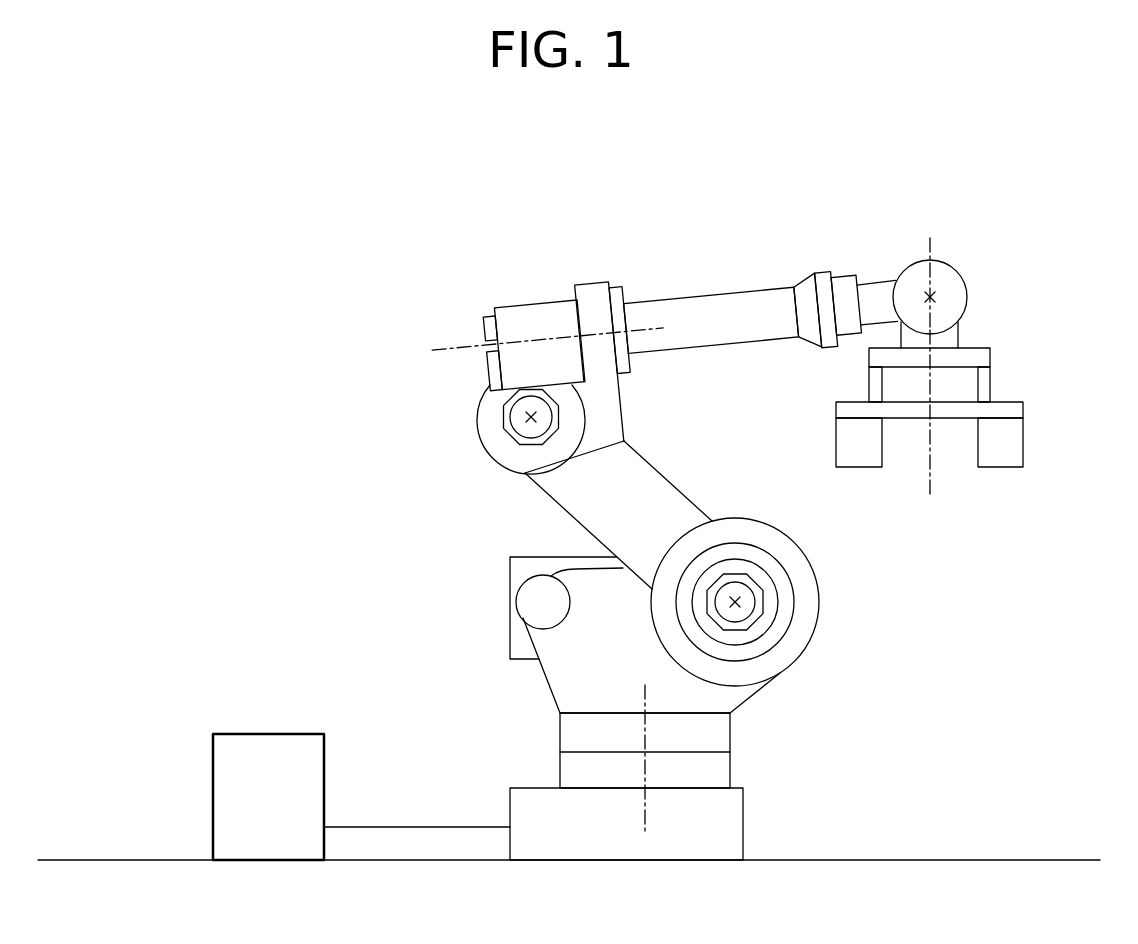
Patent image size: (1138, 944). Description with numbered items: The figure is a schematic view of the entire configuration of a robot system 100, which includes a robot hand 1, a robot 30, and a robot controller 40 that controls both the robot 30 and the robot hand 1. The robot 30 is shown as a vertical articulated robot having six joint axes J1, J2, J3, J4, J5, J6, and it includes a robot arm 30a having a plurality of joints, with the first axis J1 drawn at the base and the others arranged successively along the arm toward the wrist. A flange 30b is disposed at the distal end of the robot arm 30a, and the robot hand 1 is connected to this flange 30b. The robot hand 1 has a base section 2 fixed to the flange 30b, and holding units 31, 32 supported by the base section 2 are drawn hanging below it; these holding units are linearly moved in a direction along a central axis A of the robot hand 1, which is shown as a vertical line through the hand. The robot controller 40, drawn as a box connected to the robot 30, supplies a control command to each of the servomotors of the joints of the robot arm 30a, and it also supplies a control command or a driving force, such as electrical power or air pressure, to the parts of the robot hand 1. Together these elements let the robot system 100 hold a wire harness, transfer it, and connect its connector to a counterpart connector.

The robot system 100 is at (261, 230).
The robot hand 1 is at (1039, 509).
The base section 2 is at (991, 357).
The robot 30 is at (452, 303).
The robot arm 30a is at (713, 296).
The flange 30b is at (959, 337).
The holding unit 31 is at (836, 438).
The holding unit 32 is at (1023, 437).
The robot controller 40 is at (262, 734).
The joint axis J1 is at (626, 756).
The joint axis J2 is at (737, 603).
The joint axis J3 is at (526, 418).
The joint axis J4 is at (531, 347).
The joint axis J5 is at (937, 297).
The joint axis J6 is at (927, 268).
The central axis A is at (930, 428).